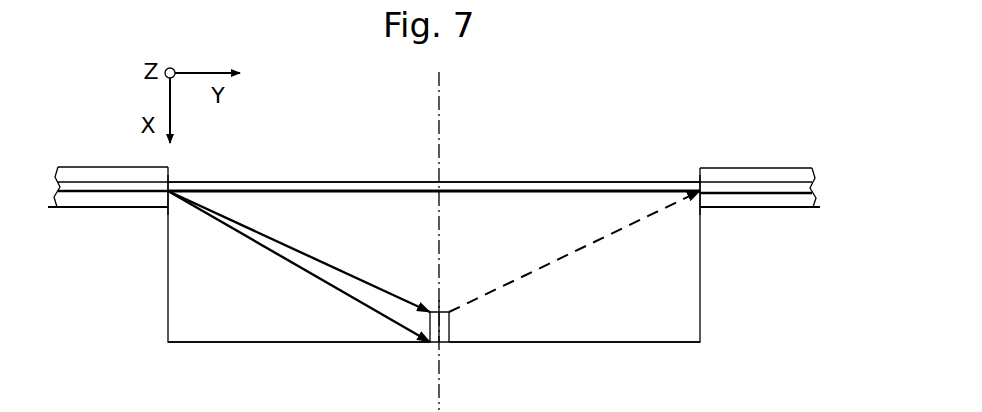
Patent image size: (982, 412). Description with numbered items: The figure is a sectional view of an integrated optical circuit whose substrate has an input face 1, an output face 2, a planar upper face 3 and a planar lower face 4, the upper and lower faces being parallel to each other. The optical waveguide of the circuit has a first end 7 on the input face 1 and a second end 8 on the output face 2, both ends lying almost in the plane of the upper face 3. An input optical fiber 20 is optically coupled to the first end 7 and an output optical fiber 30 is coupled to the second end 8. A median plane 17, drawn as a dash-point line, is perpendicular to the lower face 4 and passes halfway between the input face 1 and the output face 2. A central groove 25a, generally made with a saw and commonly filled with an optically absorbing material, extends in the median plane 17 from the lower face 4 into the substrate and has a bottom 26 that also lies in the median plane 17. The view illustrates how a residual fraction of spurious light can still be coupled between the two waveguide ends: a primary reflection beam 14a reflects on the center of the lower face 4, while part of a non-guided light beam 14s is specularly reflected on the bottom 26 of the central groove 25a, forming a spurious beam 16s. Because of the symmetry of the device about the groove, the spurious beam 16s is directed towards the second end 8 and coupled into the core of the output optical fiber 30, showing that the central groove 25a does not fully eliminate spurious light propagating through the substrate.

The input face 1 is at (168, 310).
The output face 2 is at (700, 297).
The upper face 3 is at (660, 182).
The lower face 4 is at (195, 343).
The first end 7 is at (170, 195).
The second end 8 is at (698, 195).
The primary reflection beam 14a is at (343, 292).
The non-guided light beam 14s is at (300, 252).
The spurious beam 16s is at (585, 246).
The median plane 17 is at (439, 168).
The input optical fiber 20 is at (97, 198).
The central groove 25a is at (443, 345).
The bottom 26 is at (446, 312).
The output optical fiber 30 is at (737, 178).